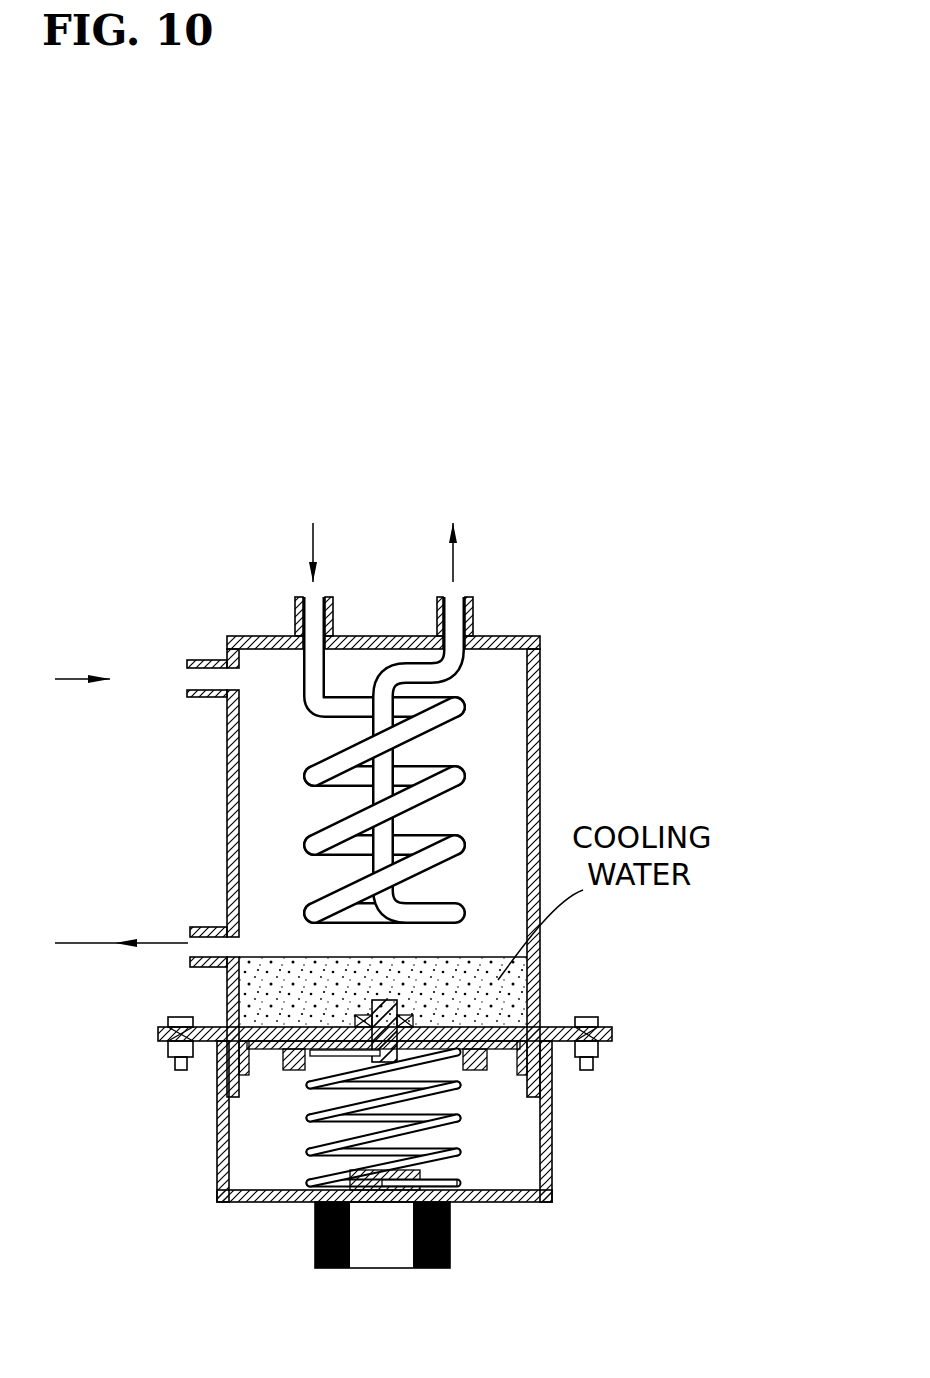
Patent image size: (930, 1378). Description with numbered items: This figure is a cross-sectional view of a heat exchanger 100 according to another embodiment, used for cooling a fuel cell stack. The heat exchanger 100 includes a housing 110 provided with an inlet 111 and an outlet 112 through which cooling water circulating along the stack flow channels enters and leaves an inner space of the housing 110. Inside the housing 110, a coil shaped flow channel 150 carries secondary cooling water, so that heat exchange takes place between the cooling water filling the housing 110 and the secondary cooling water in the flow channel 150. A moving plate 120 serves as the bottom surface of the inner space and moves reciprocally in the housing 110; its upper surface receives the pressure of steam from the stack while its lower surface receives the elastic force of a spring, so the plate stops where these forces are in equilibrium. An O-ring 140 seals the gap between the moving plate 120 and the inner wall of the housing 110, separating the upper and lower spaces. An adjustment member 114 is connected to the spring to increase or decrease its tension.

The heat exchanger 100 is at (552, 577).
The housing 110 is at (228, 797).
The inlet 111 is at (198, 683).
The outlet 112 is at (190, 933).
The adjustment member 114 is at (367, 1240).
The moving plate 120 is at (540, 1010).
The O-ring 140 is at (553, 1067).
The coil shaped flow channel 150 is at (450, 707).